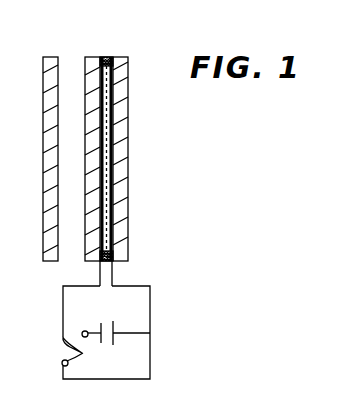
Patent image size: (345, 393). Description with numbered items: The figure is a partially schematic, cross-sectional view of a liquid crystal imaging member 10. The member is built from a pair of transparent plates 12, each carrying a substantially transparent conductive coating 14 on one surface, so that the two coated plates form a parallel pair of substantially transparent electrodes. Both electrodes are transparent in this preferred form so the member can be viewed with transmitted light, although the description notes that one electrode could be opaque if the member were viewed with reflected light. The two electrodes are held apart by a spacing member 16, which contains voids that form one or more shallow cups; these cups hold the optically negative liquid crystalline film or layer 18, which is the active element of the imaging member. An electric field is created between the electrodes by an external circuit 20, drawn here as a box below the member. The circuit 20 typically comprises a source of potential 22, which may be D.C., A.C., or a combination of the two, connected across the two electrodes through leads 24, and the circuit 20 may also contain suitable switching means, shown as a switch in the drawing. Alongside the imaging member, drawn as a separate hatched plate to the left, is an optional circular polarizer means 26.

The liquid crystal imaging member 10 is at (122, 140).
The transparent plates 12 is at (85, 75).
The transparent conductive coating 14 is at (111, 58).
The spacing member 16 is at (130, 62).
The liquid crystalline film 18 is at (111, 157).
The external circuit 20 is at (136, 332).
The source of potential 22 is at (113, 345).
The leads 24 is at (113, 273).
The circular polarizer means 26 is at (50, 262).